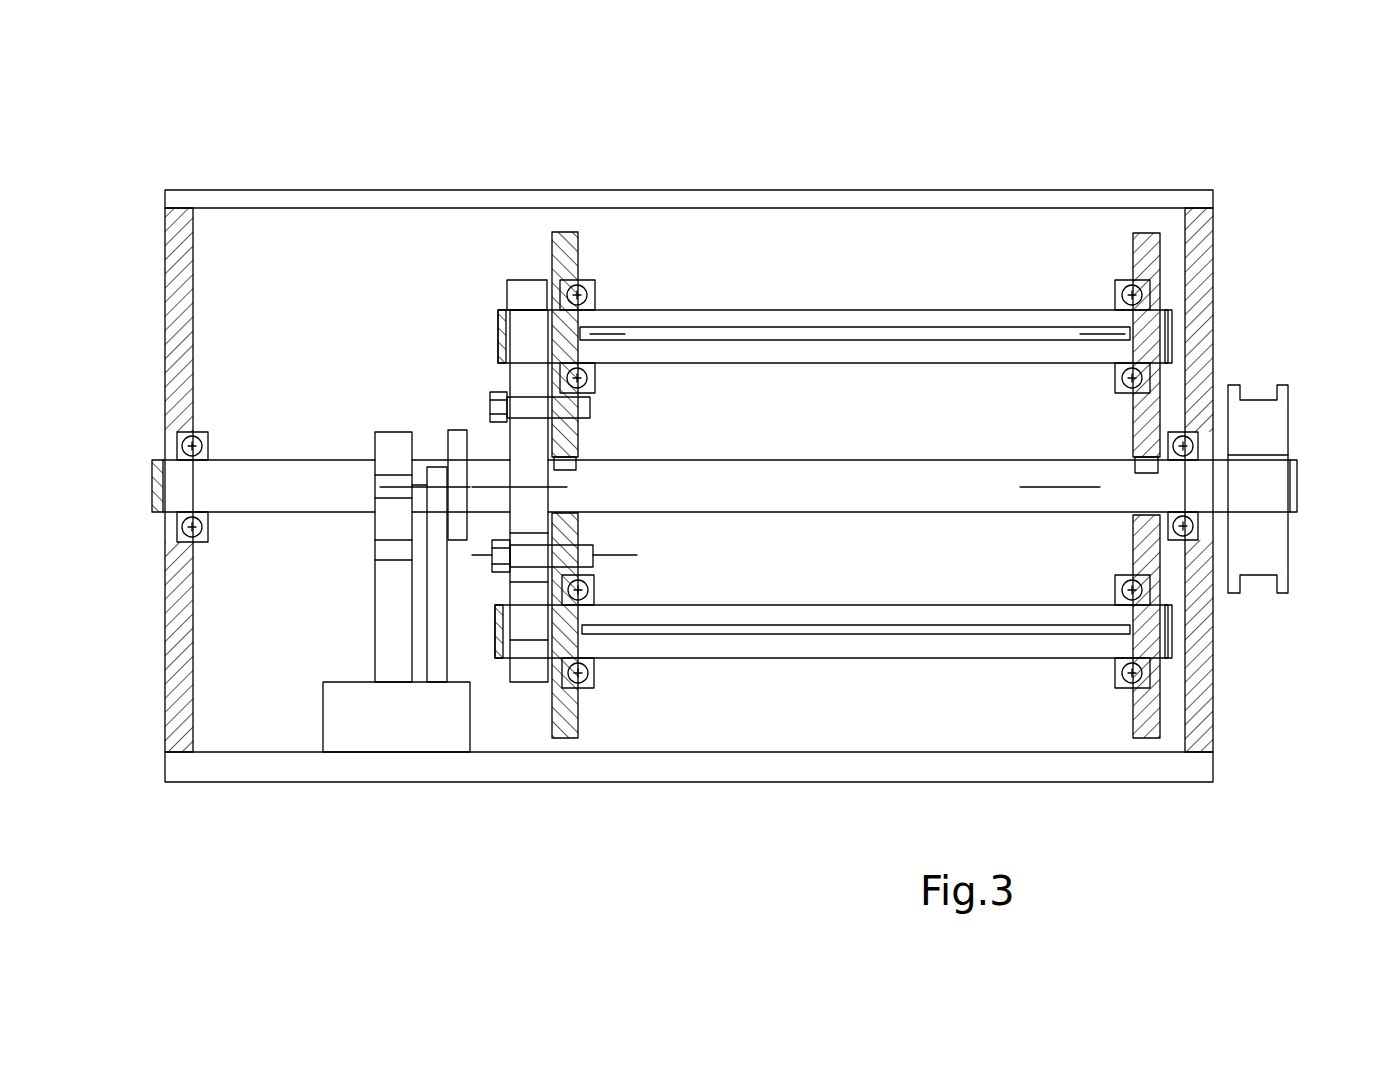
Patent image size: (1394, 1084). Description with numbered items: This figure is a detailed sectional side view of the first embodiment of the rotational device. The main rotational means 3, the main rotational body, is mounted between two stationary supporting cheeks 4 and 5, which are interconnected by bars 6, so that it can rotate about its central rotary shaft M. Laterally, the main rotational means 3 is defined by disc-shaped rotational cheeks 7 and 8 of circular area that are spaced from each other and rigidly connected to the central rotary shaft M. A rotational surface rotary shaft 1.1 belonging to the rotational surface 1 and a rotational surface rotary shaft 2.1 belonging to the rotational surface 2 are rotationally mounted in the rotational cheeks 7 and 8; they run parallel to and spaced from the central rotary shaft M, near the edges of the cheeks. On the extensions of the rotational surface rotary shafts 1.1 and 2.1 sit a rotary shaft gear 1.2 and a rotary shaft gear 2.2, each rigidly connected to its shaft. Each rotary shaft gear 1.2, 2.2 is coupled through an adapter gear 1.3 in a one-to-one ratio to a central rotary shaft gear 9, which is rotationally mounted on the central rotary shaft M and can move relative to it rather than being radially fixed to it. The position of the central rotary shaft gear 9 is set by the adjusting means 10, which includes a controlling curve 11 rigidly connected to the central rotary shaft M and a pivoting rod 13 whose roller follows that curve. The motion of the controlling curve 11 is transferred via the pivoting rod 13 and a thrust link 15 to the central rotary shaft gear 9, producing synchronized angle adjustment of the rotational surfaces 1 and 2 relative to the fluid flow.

The rotational surface 1 is at (688, 333).
The rotational surface rotary shaft 1.1 is at (1148, 347).
The rotary shaft gear 1.2 is at (523, 297).
The adapter gear 1.3 is at (505, 393).
The rotational surface 2 is at (712, 633).
The rotational surface rotary shaft 2.1 is at (1155, 640).
The rotary shaft gear 2.2 is at (533, 675).
The main rotational means 3 is at (698, 492).
The stationary supporting cheek 4 is at (1197, 287).
The stationary supporting cheek 5 is at (177, 727).
The bars 6 is at (342, 202).
The rotational cheek 7 is at (1150, 712).
The rotational cheek 8 is at (563, 702).
The central rotary shaft gear 9 is at (487, 463).
The adjusting means 10 is at (385, 578).
The controlling curve 11 is at (390, 453).
The pivoting rod 13 is at (380, 625).
The thrust link 15 is at (435, 565).
The central rotary shaft M is at (1253, 488).